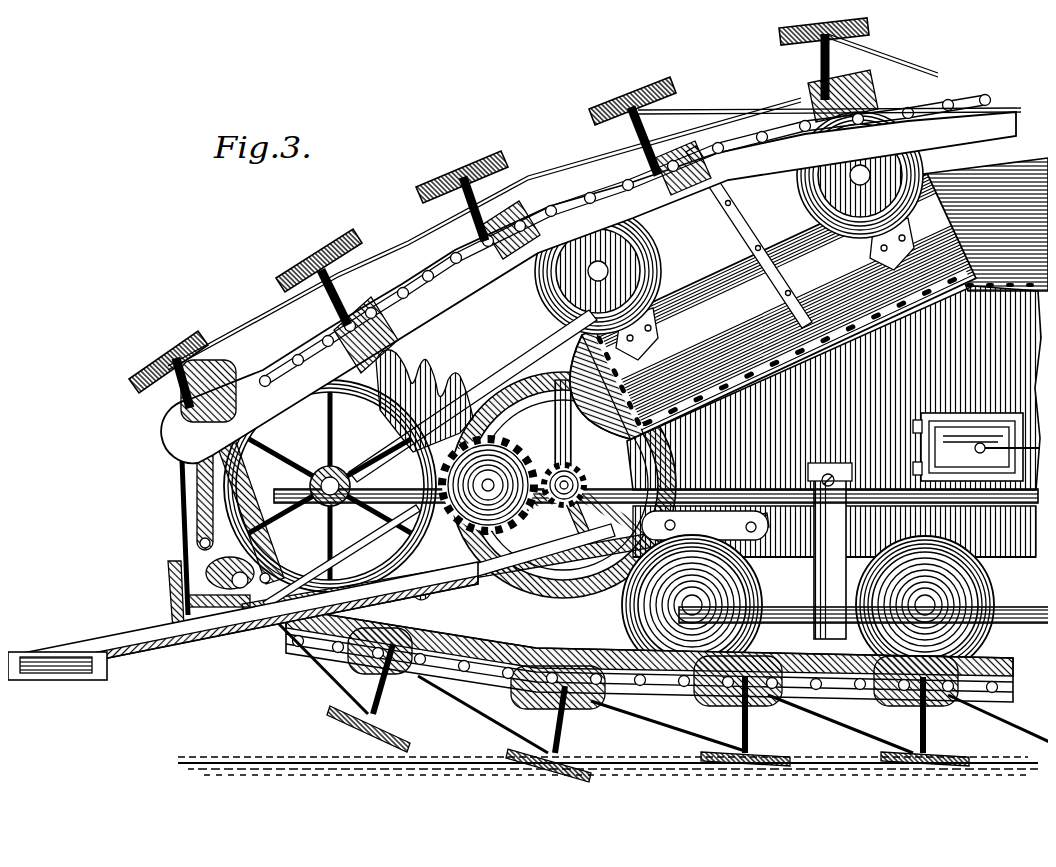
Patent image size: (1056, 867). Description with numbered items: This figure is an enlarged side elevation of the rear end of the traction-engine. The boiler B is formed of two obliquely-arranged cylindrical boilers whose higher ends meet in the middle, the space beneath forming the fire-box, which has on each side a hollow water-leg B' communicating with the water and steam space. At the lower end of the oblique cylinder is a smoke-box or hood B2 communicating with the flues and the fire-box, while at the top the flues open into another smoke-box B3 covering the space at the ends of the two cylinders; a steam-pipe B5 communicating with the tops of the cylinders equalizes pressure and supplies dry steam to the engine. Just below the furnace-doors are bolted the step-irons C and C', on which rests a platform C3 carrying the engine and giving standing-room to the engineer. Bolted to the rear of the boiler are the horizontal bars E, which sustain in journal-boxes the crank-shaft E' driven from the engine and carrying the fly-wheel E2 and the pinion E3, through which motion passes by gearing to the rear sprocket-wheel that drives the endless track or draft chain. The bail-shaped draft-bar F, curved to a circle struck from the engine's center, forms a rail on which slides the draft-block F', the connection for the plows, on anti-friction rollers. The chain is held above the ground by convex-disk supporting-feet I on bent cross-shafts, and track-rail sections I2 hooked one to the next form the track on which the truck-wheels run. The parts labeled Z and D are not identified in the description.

The connecting rod Z is at (594, 202).
The supporting-feet I is at (499, 213).
The track-rail sections I2 is at (588, 266).
The pinion E3 is at (424, 475).
The horizontal bars E is at (391, 505).
The crank-shaft E' is at (656, 424).
The fly-wheel E2 is at (563, 498).
The draft-bar F is at (243, 620).
The draft-block F' is at (57, 649).
The boiler B is at (755, 283).
The smoke-box or hood B2 is at (698, 299).
The smoke-box B3 is at (985, 224).
The water-leg B' is at (834, 421).
The steam-pipe B5 is at (976, 447).
The step-iron C is at (547, 551).
The step-iron C' is at (663, 695).
The platform C3 is at (863, 605).
The carrying wheel D is at (808, 605).